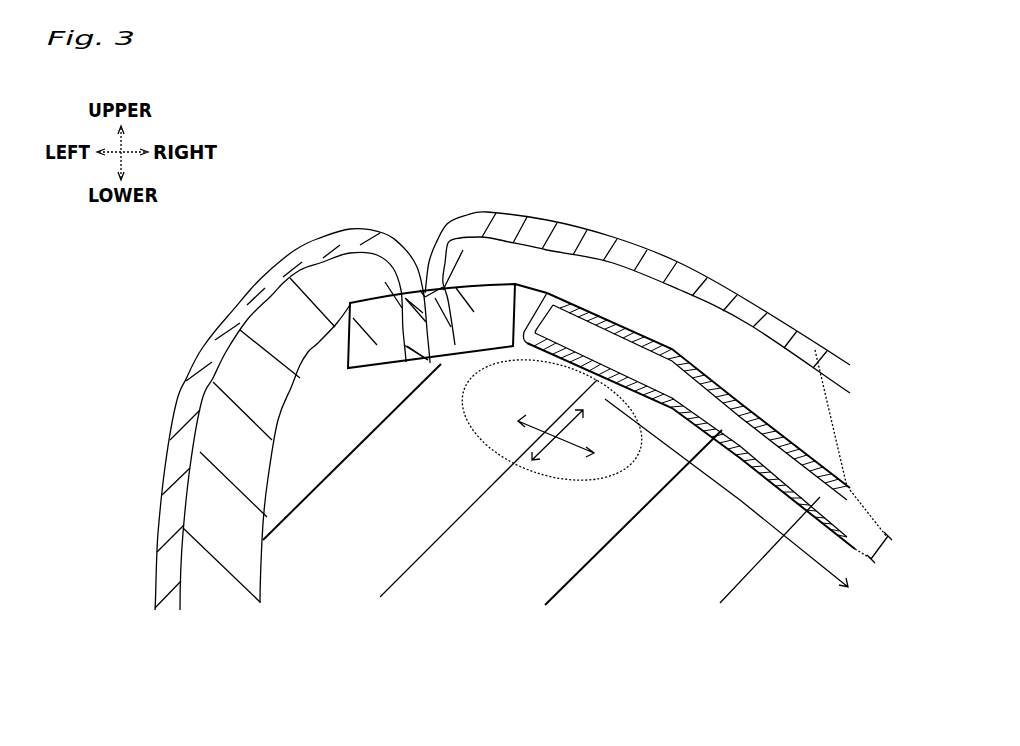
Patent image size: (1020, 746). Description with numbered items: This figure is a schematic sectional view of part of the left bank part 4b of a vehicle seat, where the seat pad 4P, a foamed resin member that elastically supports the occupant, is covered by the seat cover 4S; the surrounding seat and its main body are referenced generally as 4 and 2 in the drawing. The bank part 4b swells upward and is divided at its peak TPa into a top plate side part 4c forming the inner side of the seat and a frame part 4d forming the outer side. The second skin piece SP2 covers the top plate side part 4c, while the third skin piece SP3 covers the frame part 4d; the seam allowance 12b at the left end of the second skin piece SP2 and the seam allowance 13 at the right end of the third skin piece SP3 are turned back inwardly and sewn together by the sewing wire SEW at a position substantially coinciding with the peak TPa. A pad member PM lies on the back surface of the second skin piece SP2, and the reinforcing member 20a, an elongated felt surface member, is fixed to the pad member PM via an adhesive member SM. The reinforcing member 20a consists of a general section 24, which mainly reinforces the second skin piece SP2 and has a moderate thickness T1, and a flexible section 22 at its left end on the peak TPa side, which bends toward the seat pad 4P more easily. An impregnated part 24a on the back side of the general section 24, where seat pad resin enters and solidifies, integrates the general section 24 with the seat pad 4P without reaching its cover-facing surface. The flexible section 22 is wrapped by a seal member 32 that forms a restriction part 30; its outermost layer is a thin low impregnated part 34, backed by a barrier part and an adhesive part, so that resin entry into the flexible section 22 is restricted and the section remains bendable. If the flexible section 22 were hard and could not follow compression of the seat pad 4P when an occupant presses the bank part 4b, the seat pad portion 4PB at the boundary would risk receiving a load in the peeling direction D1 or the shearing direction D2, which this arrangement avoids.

The seat back side portion 4 is at (235, 232).
The seat 2 is at (312, 388).
The bank part 4b is at (502, 366).
The top plate side part 4c is at (637, 244).
The frame part 4d is at (490, 132).
The seat cover 4S is at (463, 423).
The second skin piece SP2 is at (747, 310).
The third skin piece SP3 is at (186, 390).
The pad member PM is at (687, 327).
The peak TPa is at (418, 230).
The sewing wire SEW is at (430, 283).
The seam allowance 13 is at (347, 302).
The seam allowance 12b is at (476, 325).
The restriction part 30 is at (686, 349).
The seal member 32 is at (684, 405).
The adhesive member SM is at (595, 380).
The low impregnated part 34 is at (563, 385).
The reinforcing member 20a is at (777, 430).
The seat pad portion 4PB is at (486, 450).
The flexible section 22 is at (520, 369).
The peeling direction D1 is at (546, 447).
The shearing direction D2 is at (579, 447).
The general section 24 is at (726, 501).
The impregnated part 24a is at (852, 510).
The thickness T1 is at (881, 550).
The seat pad 4P is at (677, 572).